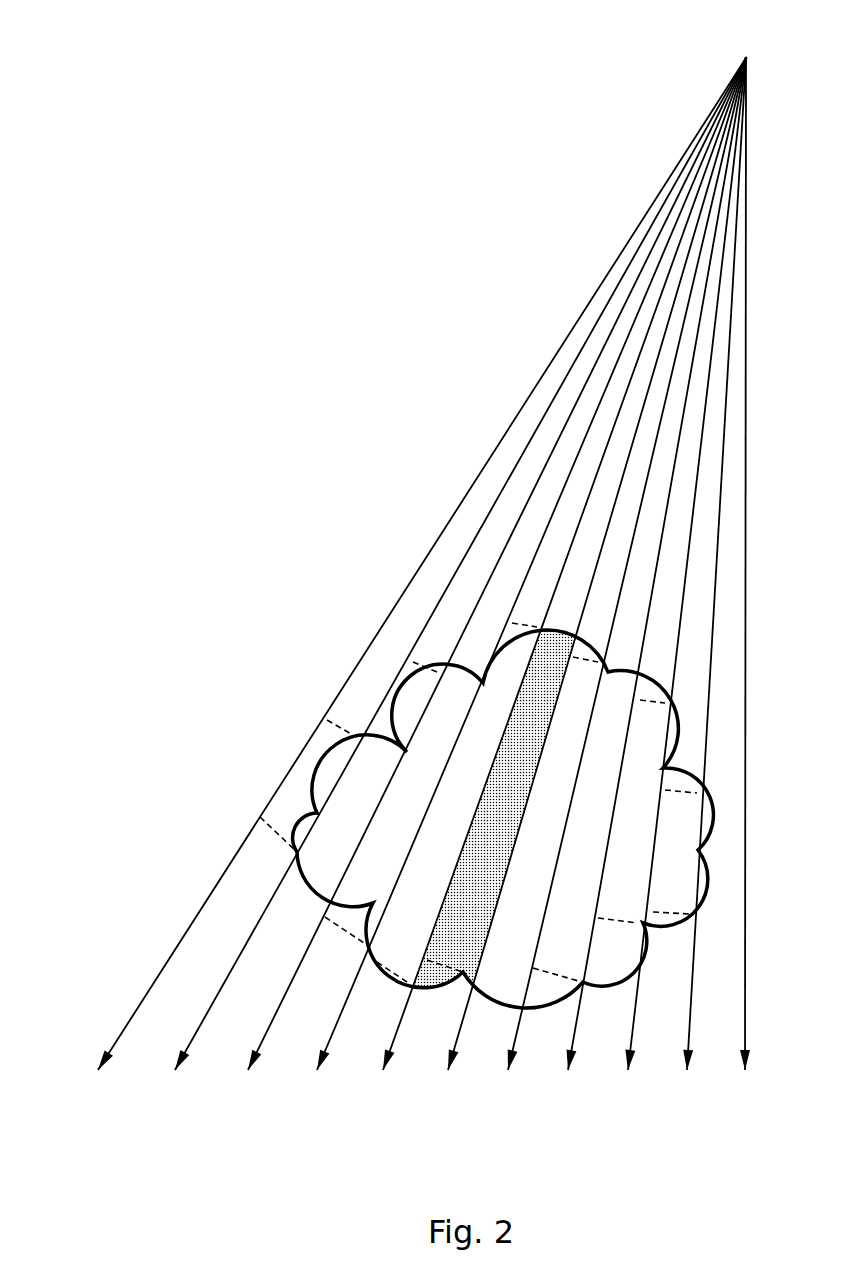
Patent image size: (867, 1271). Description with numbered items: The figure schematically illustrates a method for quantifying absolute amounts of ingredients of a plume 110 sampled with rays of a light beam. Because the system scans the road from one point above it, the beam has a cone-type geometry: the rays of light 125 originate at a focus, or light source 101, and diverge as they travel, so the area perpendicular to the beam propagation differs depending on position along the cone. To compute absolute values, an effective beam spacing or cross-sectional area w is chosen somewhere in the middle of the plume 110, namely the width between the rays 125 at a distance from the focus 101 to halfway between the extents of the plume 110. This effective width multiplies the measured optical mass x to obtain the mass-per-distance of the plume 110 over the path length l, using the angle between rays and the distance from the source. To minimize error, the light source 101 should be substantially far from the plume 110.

The focus (light source) 101 is at (747, 44).
The rays of light 125 is at (515, 458).
The plume 110 is at (372, 775).